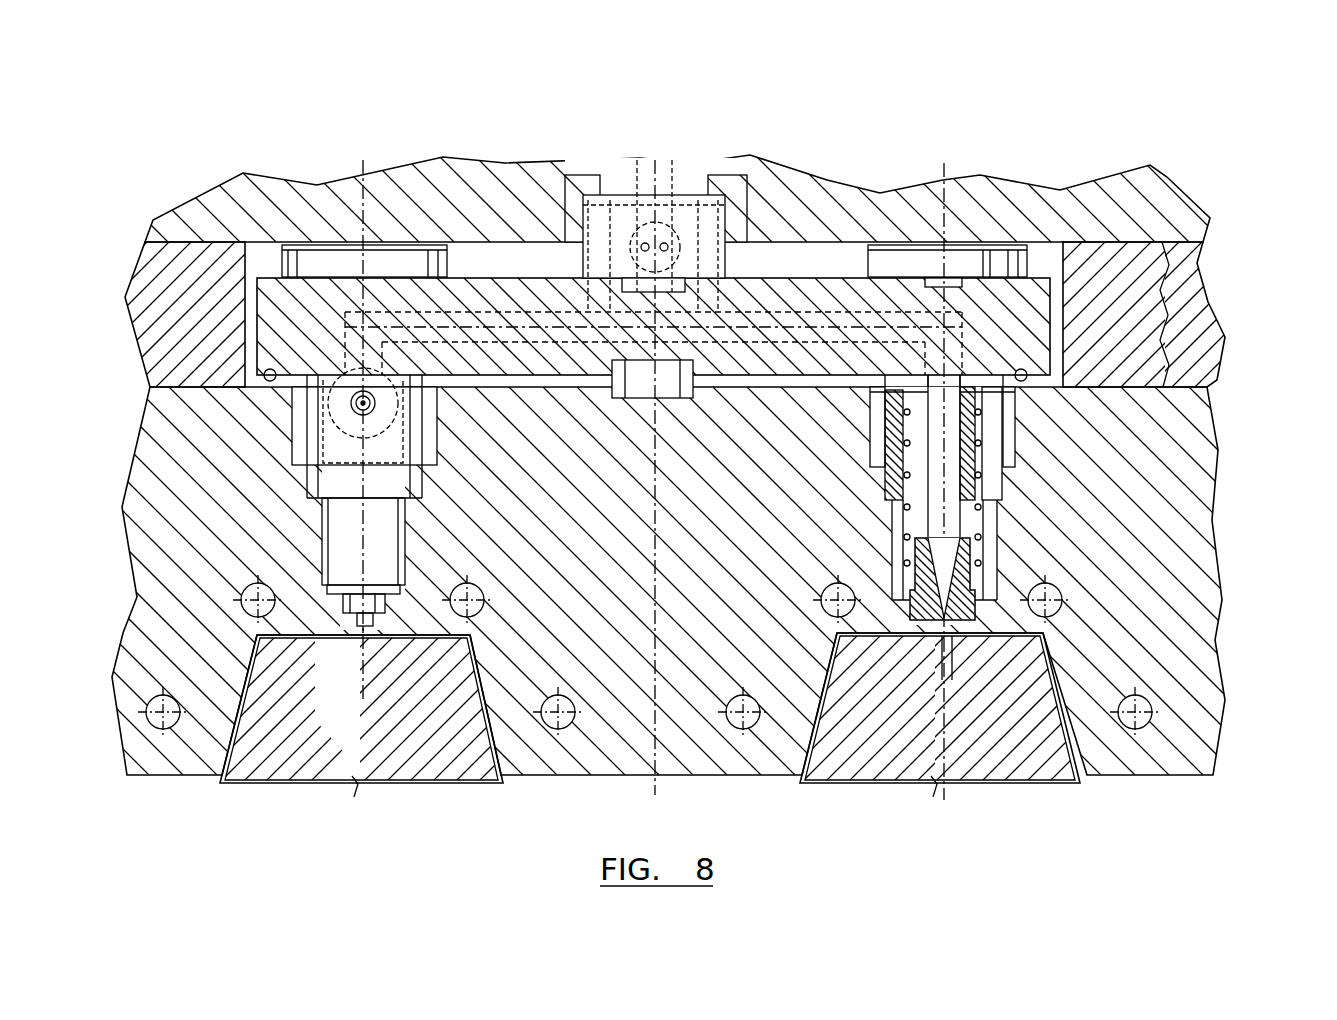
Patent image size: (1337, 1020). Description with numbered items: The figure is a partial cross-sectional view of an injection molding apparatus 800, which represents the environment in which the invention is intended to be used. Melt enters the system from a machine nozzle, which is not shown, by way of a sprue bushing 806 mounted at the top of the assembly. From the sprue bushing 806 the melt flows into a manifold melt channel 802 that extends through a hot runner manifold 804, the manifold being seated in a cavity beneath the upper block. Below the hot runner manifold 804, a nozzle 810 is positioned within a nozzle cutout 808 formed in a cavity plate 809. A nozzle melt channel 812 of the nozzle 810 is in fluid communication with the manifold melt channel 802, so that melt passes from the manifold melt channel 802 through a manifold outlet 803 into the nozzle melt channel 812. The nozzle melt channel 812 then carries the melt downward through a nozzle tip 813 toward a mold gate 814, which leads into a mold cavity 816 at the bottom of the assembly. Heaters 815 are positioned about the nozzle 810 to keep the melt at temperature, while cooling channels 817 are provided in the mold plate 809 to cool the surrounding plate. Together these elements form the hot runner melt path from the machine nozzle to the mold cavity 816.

The injection molding apparatus 800 is at (1032, 81).
The manifold melt channel 802 is at (792, 318).
The manifold outlet 803 is at (1014, 390).
The hot runner manifold 804 is at (270, 332).
The sprue bushing 806 is at (693, 173).
The nozzle cutout 808 is at (897, 527).
The cavity plate 809 is at (1170, 587).
The nozzle 810 is at (985, 513).
The nozzle melt channel 812 is at (952, 446).
The nozzle tip 813 is at (940, 633).
The mold gate 814 is at (972, 633).
The heaters 815 is at (984, 556).
The mold cavity 816 is at (816, 740).
The cooling channels 817 is at (1152, 698).